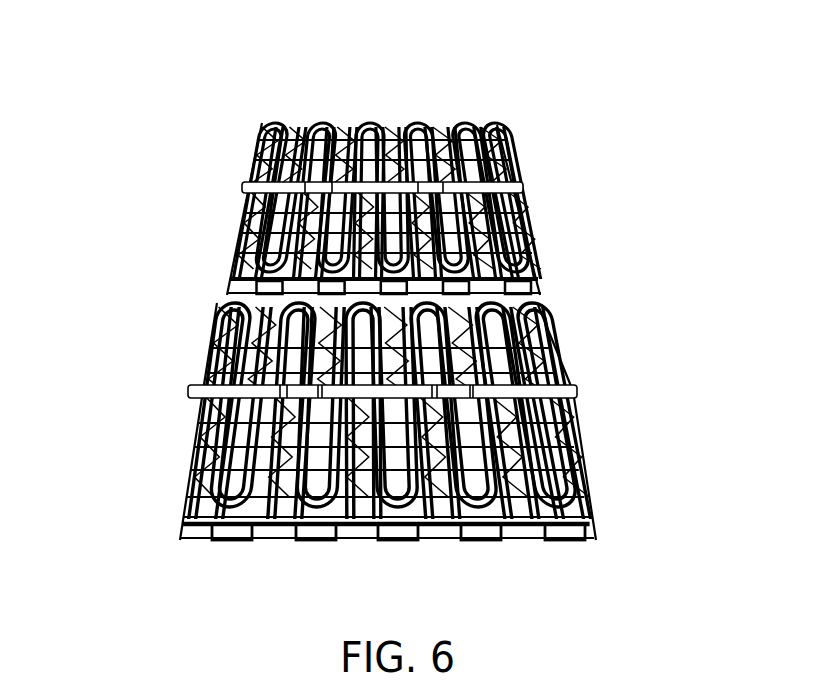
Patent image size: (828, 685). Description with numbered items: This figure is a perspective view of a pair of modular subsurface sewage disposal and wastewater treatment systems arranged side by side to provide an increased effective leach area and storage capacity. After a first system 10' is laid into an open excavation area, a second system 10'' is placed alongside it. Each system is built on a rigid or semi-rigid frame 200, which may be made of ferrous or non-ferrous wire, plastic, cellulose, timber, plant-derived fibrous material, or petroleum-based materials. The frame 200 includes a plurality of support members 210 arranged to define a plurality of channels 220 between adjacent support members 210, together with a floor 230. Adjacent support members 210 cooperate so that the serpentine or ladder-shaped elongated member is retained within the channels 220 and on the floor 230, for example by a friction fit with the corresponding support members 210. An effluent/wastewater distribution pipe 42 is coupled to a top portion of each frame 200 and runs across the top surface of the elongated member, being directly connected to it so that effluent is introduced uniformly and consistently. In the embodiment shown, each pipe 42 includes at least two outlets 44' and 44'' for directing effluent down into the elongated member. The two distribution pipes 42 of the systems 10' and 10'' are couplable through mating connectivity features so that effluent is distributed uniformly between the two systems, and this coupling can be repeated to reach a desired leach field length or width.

The first subsurface sewage disposal/wastewater treatment system 10' is at (424, 180).
The second subsurface sewage disposal/wastewater treatment system 10'' is at (377, 450).
The effluent/wastewater distribution pipe 42 is at (367, 123).
The outlet 44' is at (450, 172).
The outlet 44'' is at (300, 172).
The frame 200 is at (208, 367).
The support member 210 is at (187, 457).
The channel 220 is at (197, 517).
The floor 230 is at (190, 493).